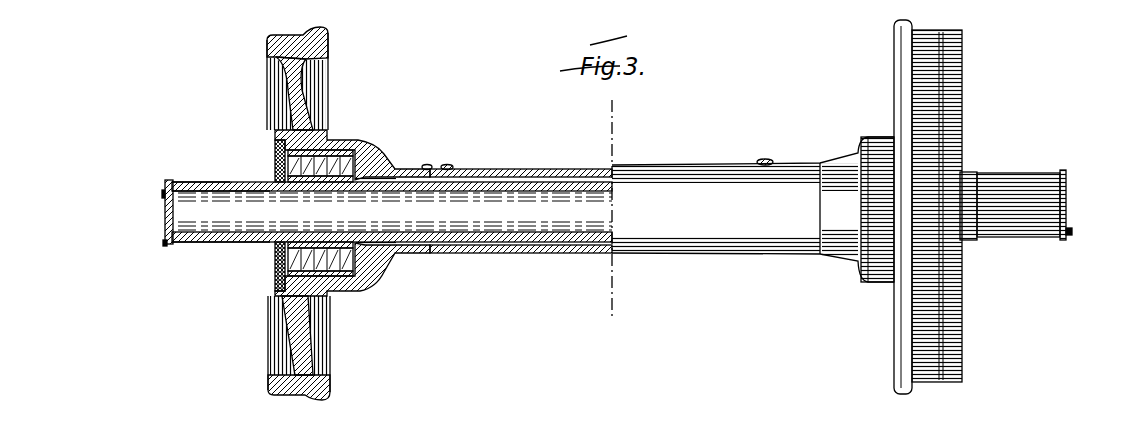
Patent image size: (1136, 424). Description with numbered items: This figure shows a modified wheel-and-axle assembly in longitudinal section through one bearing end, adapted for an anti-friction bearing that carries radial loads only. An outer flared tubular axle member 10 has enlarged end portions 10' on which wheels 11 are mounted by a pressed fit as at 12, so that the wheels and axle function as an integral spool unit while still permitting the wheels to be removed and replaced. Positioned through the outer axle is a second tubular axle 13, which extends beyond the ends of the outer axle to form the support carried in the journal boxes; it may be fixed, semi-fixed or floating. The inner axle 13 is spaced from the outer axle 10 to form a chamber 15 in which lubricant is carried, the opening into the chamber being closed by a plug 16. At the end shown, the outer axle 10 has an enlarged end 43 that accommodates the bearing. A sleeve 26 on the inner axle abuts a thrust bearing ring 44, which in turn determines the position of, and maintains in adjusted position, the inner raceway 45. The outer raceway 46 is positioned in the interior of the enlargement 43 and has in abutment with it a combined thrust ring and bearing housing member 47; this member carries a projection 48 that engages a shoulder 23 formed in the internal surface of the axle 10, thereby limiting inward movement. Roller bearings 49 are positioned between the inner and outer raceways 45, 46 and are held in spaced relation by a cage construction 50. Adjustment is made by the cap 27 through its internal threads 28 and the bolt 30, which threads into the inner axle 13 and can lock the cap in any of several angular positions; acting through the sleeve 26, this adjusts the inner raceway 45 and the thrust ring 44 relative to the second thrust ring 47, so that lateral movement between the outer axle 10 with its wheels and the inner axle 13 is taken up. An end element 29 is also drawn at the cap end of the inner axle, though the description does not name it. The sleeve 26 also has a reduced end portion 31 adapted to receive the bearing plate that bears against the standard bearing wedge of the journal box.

The outer flared tubular axle member 10 is at (533, 207).
The enlarged end portions 10' is at (563, 194).
The wheels 11 is at (906, 368).
The pressed fit 12 is at (331, 42).
The second tubular axle 13 is at (508, 190).
The chamber 15 is at (427, 164).
The plug 16 is at (449, 165).
The shoulder 23 is at (313, 312).
The sleeve 26 is at (247, 250).
The cap 27 is at (165, 226).
The internal threads 28 is at (170, 187).
The nut 29 is at (166, 257).
The screws 30 is at (164, 245).
The reduced end portion 31 is at (210, 183).
The enlarged end 43 is at (347, 138).
The thrust bearing ring 44 is at (270, 264).
The inner raceway 45 is at (368, 270).
The outer raceway 46 is at (332, 293).
The combined thrust ring and bearing housing member 47 is at (280, 270).
The projection 48 is at (279, 286).
The roller bearings 49 is at (356, 150).
The cage construction 50 is at (375, 163).